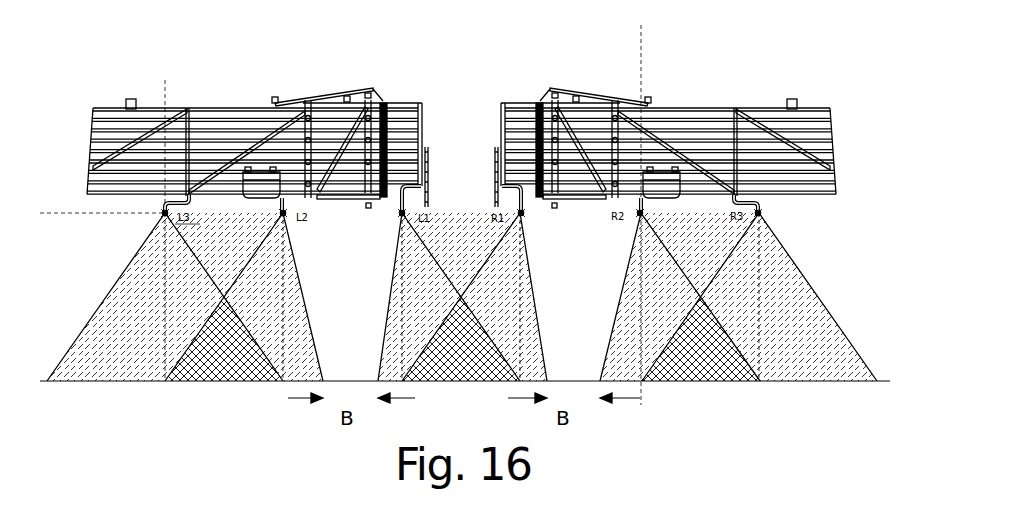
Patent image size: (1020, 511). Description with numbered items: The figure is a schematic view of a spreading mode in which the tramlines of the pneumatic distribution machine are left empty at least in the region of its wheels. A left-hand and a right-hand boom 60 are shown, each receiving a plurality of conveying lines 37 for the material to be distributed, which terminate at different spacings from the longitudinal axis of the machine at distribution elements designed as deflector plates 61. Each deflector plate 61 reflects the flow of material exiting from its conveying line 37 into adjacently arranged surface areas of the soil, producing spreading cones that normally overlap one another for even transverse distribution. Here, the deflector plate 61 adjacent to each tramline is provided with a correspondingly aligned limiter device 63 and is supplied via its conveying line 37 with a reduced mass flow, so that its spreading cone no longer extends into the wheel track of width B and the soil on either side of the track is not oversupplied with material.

The conveying line 37 is at (93, 144).
The boom 60 is at (464, 116).
The deflector plate 61 is at (162, 214).
The limiter device 63 is at (401, 215).